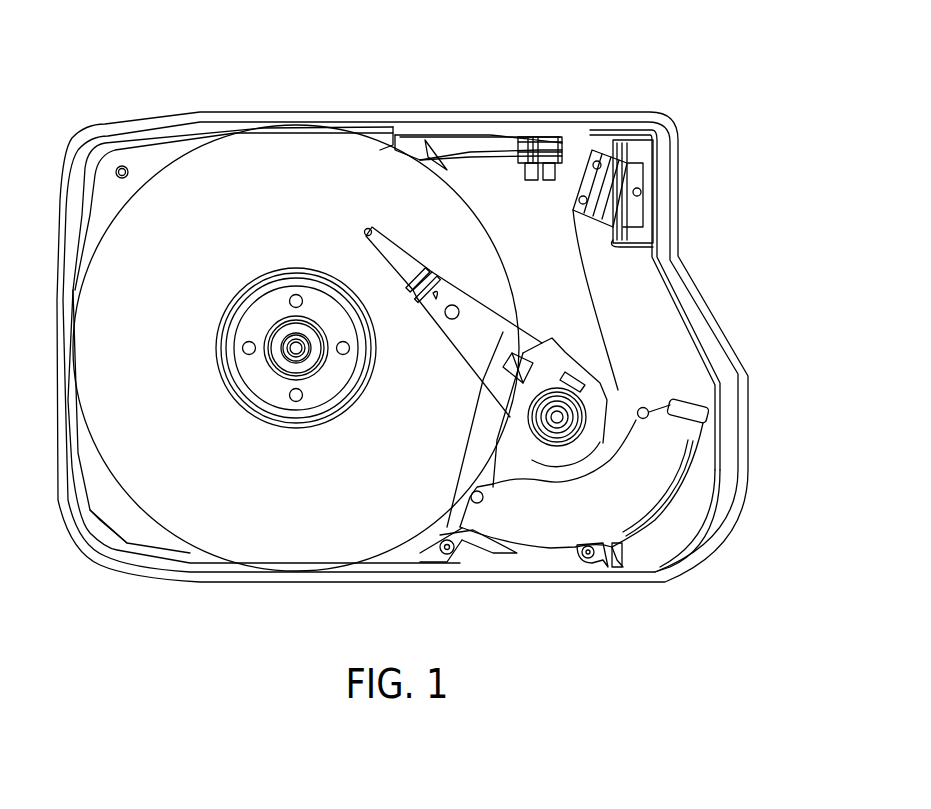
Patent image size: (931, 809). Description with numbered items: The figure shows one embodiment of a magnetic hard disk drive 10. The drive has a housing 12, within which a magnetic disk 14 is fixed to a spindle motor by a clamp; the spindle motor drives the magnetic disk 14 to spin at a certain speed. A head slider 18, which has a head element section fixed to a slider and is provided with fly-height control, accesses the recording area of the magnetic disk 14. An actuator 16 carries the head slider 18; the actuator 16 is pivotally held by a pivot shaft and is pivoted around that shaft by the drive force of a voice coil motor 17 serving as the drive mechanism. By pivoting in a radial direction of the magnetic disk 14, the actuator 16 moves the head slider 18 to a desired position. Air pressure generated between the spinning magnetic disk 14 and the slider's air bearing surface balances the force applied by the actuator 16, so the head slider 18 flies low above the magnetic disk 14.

The magnetic hard disk drive 10 is at (378, 102).
The housing 12 is at (670, 172).
The magnetic disk 14 is at (248, 160).
The actuator 16 is at (560, 332).
The voice coil motor 17 is at (627, 495).
The head slider 18 is at (364, 234).